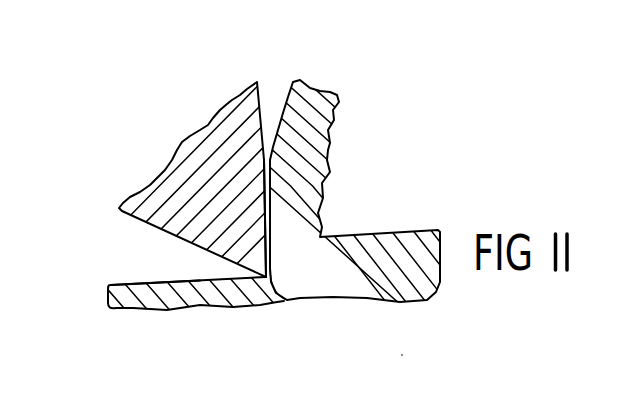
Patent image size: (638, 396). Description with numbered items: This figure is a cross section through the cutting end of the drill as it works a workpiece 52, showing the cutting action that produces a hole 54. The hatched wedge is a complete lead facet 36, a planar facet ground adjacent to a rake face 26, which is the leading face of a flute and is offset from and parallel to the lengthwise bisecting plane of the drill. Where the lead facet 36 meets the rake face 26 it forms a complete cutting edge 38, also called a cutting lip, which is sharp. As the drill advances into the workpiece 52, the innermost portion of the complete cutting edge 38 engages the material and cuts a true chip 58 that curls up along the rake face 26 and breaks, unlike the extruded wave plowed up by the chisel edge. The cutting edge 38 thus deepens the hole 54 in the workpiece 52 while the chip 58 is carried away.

The rake face 26 is at (262, 162).
The complete lead facet 36 is at (145, 221).
The complete cutting edge 38 is at (280, 303).
The workpiece 52 is at (163, 309).
The hole 54 is at (122, 284).
The chip 58 is at (331, 173).